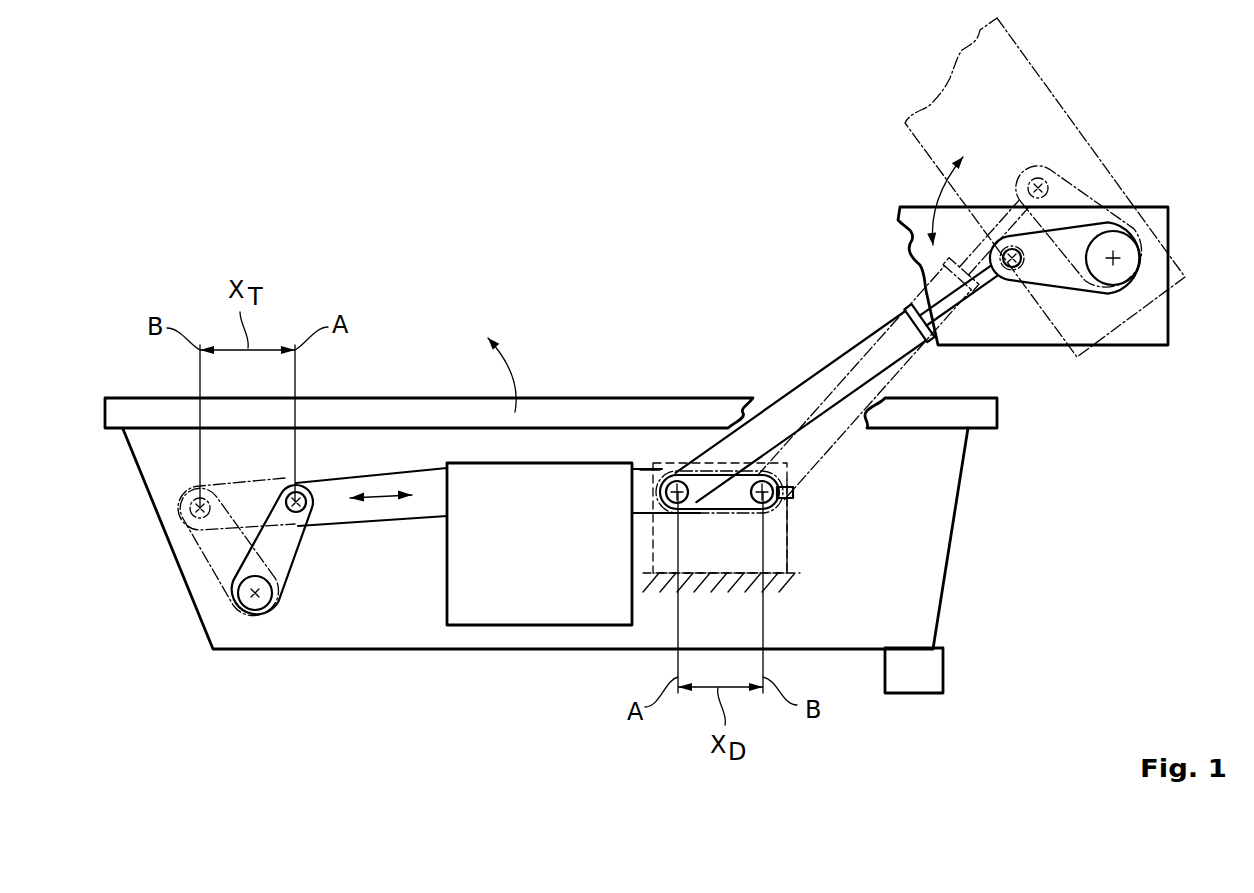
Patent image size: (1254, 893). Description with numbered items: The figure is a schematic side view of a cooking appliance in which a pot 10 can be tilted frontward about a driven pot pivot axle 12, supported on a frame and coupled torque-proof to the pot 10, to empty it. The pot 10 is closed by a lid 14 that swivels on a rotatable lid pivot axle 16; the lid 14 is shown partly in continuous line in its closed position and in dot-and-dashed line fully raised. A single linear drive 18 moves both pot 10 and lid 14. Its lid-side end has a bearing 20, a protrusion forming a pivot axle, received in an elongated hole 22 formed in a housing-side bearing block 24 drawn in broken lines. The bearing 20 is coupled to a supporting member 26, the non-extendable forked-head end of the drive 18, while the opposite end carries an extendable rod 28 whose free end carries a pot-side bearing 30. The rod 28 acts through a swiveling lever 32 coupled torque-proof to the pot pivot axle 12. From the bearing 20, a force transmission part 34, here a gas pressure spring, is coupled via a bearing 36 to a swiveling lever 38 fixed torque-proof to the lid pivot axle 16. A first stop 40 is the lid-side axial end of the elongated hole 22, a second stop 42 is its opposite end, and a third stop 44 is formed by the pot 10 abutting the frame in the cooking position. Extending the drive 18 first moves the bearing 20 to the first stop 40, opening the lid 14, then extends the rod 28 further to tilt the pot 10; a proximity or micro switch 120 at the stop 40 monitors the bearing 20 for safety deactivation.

The pot 10 is at (405, 640).
The pot pivot axle 12 is at (262, 612).
The lid 14 is at (1052, 337).
The lid pivot axle 16 is at (1123, 270).
The drive 18 is at (537, 610).
The bearing 20 is at (663, 476).
The elongated hole 22 is at (715, 482).
The bearing block 24 is at (787, 553).
The supporting member 26 is at (644, 474).
The rod 28 is at (376, 470).
The pot-side bearing 30 is at (300, 488).
The swiveling lever 32 is at (288, 553).
The force transmission part 34 is at (798, 397).
The bearing 36 is at (1037, 270).
The swiveling lever 38 is at (1067, 277).
The first stop 40 is at (793, 485).
The second stop 42 is at (647, 498).
The third stop 44 is at (932, 670).
The proximity switch or micro switch 120 is at (795, 498).